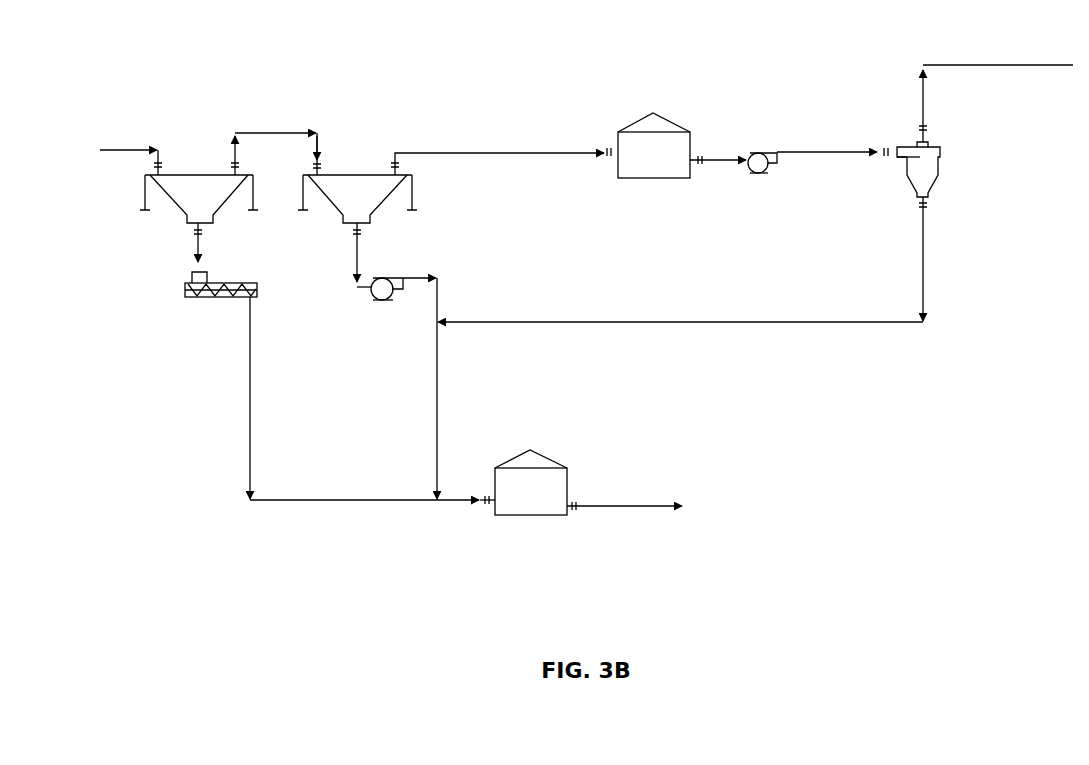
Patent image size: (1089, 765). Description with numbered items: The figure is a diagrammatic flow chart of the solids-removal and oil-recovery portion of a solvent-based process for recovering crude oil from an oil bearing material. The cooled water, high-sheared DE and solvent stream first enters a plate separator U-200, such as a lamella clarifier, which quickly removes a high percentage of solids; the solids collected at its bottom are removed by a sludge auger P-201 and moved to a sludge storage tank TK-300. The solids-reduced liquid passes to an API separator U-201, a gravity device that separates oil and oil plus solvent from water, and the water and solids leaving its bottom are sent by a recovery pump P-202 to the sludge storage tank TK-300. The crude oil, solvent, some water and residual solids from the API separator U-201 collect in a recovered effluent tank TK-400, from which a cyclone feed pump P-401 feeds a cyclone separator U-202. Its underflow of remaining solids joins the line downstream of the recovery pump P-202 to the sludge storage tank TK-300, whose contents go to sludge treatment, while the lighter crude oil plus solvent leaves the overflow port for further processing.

The plate separator U-200 is at (236, 125).
The API separator U-201 is at (394, 120).
The cyclone separator U-202 is at (1031, 210).
The sludge auger P-201 is at (225, 342).
The recovery pump P-202 is at (420, 342).
The cyclone feed pump P-401 is at (799, 220).
The recovered effluent tank TK-400 is at (698, 90).
The sludge storage tank TK-300 is at (577, 430).